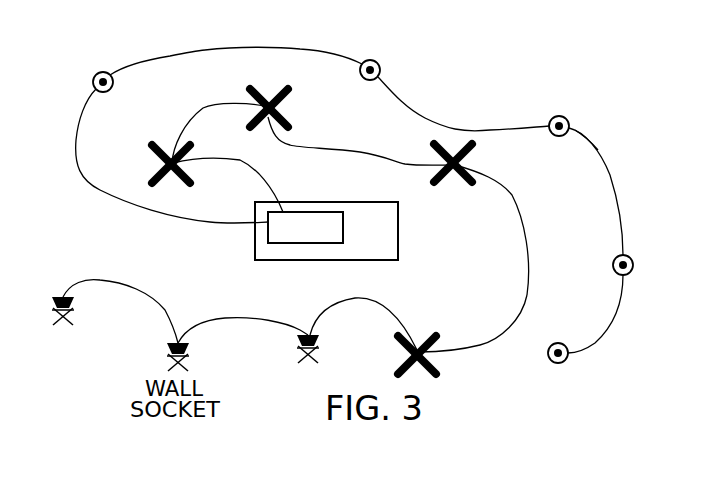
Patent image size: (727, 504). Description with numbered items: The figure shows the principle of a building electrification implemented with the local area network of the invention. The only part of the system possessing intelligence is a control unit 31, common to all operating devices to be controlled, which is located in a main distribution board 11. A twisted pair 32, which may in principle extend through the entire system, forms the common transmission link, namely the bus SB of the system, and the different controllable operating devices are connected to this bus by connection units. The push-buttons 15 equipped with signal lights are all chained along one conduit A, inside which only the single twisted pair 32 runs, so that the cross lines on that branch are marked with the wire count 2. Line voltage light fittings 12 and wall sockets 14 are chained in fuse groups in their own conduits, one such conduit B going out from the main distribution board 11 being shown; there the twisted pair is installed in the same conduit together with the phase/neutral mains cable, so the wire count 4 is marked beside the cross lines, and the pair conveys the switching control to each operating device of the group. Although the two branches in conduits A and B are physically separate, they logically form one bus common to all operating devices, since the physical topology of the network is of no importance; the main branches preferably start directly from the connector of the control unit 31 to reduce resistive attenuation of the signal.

The two wires 2 is at (203, 40).
The four wires 4 is at (203, 120).
The main distribution board 11 is at (354, 203).
The light fitting 12 is at (434, 332).
The wall socket 14 is at (63, 300).
The push-button 15 is at (558, 116).
The control unit 31 is at (344, 228).
The twisted pair 32 is at (591, 139).
The bus SB is at (160, 55).
The conduit A is at (478, 122).
The conduit B is at (528, 243).